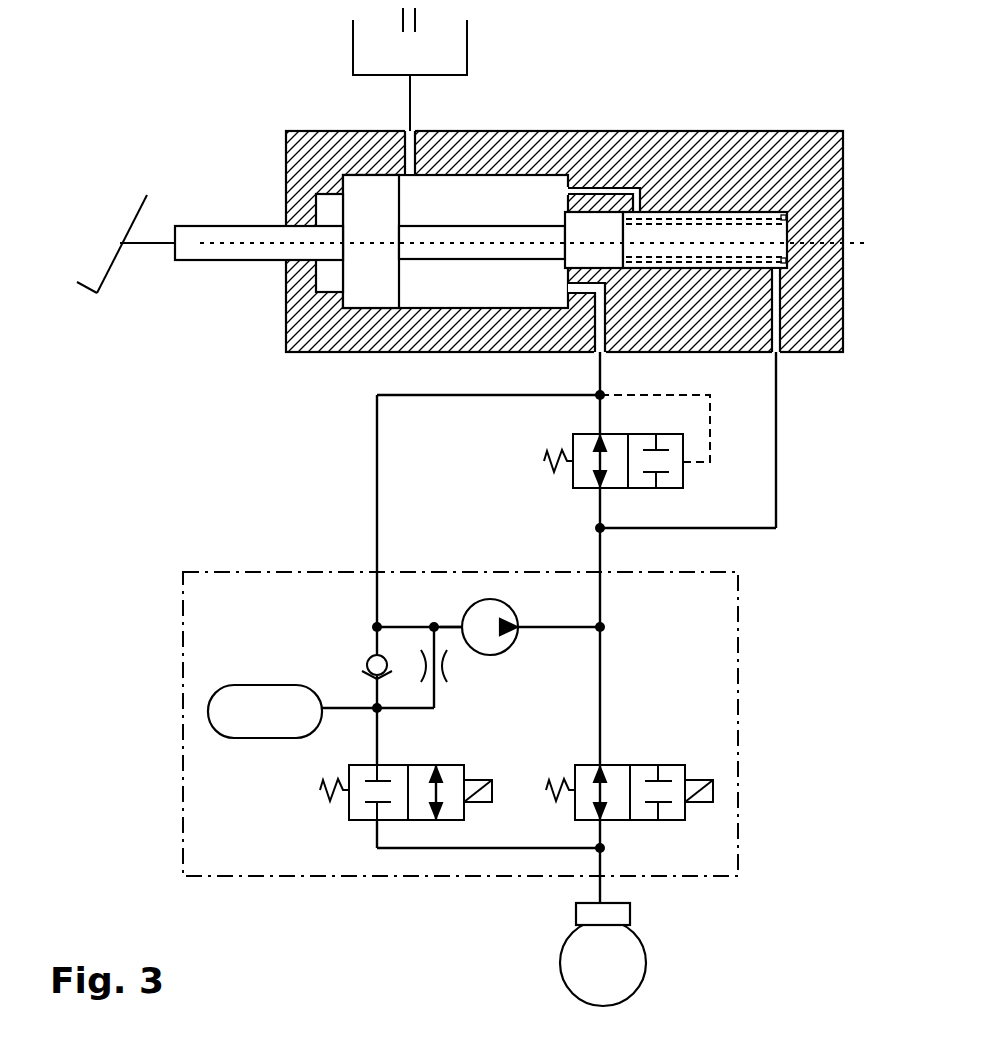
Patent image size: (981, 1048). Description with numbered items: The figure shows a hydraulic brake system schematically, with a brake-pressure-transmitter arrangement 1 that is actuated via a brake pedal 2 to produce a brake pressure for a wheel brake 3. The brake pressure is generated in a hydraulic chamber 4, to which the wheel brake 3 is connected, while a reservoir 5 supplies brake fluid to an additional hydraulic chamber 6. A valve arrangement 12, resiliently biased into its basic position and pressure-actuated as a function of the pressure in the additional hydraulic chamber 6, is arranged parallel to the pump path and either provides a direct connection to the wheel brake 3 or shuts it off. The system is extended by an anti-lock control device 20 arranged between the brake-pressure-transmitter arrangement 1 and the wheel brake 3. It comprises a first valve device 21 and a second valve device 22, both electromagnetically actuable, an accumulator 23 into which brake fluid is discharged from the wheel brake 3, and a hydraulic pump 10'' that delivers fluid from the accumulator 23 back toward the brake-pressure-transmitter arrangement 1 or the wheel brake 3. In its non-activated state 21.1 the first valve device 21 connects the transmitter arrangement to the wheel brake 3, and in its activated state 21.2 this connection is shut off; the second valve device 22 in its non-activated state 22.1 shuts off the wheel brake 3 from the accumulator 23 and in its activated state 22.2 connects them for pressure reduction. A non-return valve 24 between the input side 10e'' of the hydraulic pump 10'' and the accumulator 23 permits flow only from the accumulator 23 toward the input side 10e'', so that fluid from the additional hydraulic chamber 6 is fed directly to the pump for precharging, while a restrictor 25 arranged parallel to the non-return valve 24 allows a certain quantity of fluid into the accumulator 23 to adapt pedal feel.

The brake-pressure-transmitter arrangement 1 is at (832, 84).
The brake pedal 2 is at (120, 243).
The wheel brake 3 is at (618, 907).
The hydraulic chamber 4 is at (697, 253).
The reservoir 5 is at (418, 65).
The additional hydraulic chamber 6 is at (477, 208).
The input side of the hydraulic pump 10e'' is at (425, 570).
The hydraulic pump 10'' is at (493, 584).
The valve arrangement 12 is at (573, 489).
The anti-lock control device 20 is at (738, 572).
The first valve device 21 is at (626, 789).
The non-activated state of the first valve device 21.1 is at (586, 808).
The activated state of the first valve device 21.2 is at (675, 812).
The second valve device 22 is at (398, 820).
The non-activated state of the second valve device 22.1 is at (362, 808).
The activated state of the second valve device 22.2 is at (452, 812).
The accumulator 23 is at (279, 726).
The non-return valve 24 is at (366, 659).
The restrictor 25 is at (440, 667).